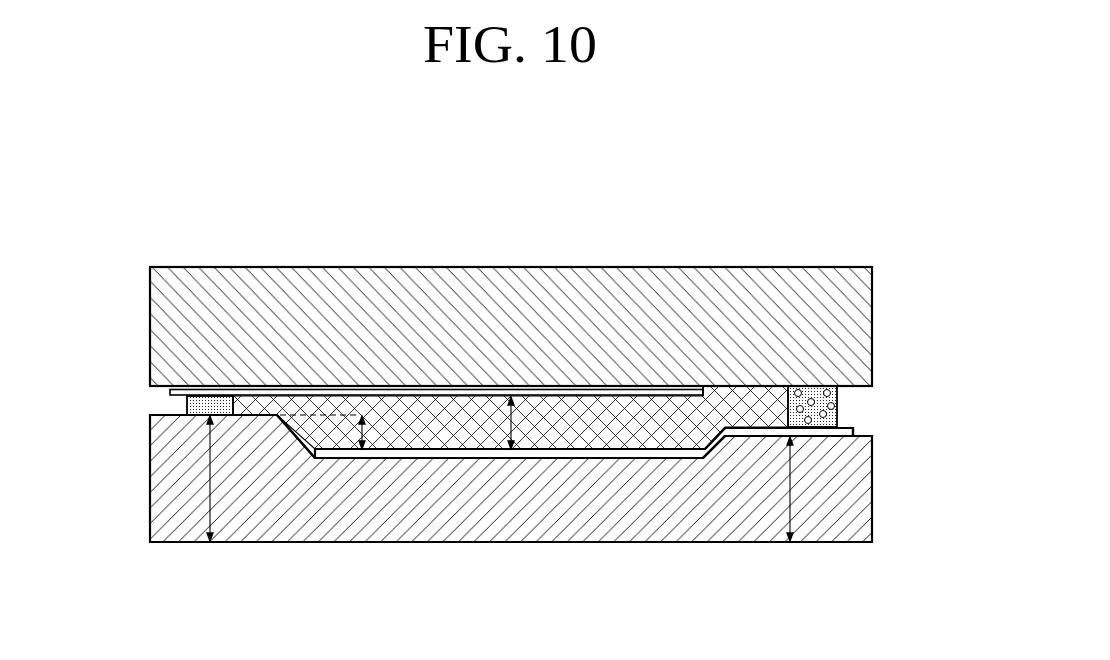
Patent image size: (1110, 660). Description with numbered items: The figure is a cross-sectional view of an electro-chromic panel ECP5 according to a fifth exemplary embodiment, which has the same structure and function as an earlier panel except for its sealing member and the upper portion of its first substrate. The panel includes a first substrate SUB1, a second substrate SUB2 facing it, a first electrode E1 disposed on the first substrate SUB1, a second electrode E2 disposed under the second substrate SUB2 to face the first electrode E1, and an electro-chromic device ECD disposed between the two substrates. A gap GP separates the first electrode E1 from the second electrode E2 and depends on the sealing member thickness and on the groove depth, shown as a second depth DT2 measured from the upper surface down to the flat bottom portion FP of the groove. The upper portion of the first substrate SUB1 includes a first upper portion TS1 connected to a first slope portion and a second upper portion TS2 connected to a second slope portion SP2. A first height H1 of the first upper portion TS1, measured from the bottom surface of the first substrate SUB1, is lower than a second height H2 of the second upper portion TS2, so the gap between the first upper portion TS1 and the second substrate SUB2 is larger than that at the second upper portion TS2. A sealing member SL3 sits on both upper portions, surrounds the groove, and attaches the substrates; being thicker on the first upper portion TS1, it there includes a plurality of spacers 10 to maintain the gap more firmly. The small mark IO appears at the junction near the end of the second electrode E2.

The electro-chromic panel ECP5 is at (760, 214).
The second electrode E2 is at (572, 392).
The second substrate SUB2 is at (857, 327).
The sealing member SL3 is at (187, 402).
The spacers 10 is at (838, 401).
The first upper portion TS1 is at (845, 440).
The first substrate SUB1 is at (835, 488).
The second upper portion TS2 is at (175, 416).
The second height H2 is at (224, 478).
The second depth DT2 is at (345, 433).
The gap GP is at (525, 423).
The opening IO is at (709, 409).
The first height H1 is at (802, 489).
The second slope portion SP2 is at (292, 437).
The electro-chromic device ECD is at (457, 432).
The first electrode E1 is at (553, 456).
The bottom portion FP is at (651, 458).